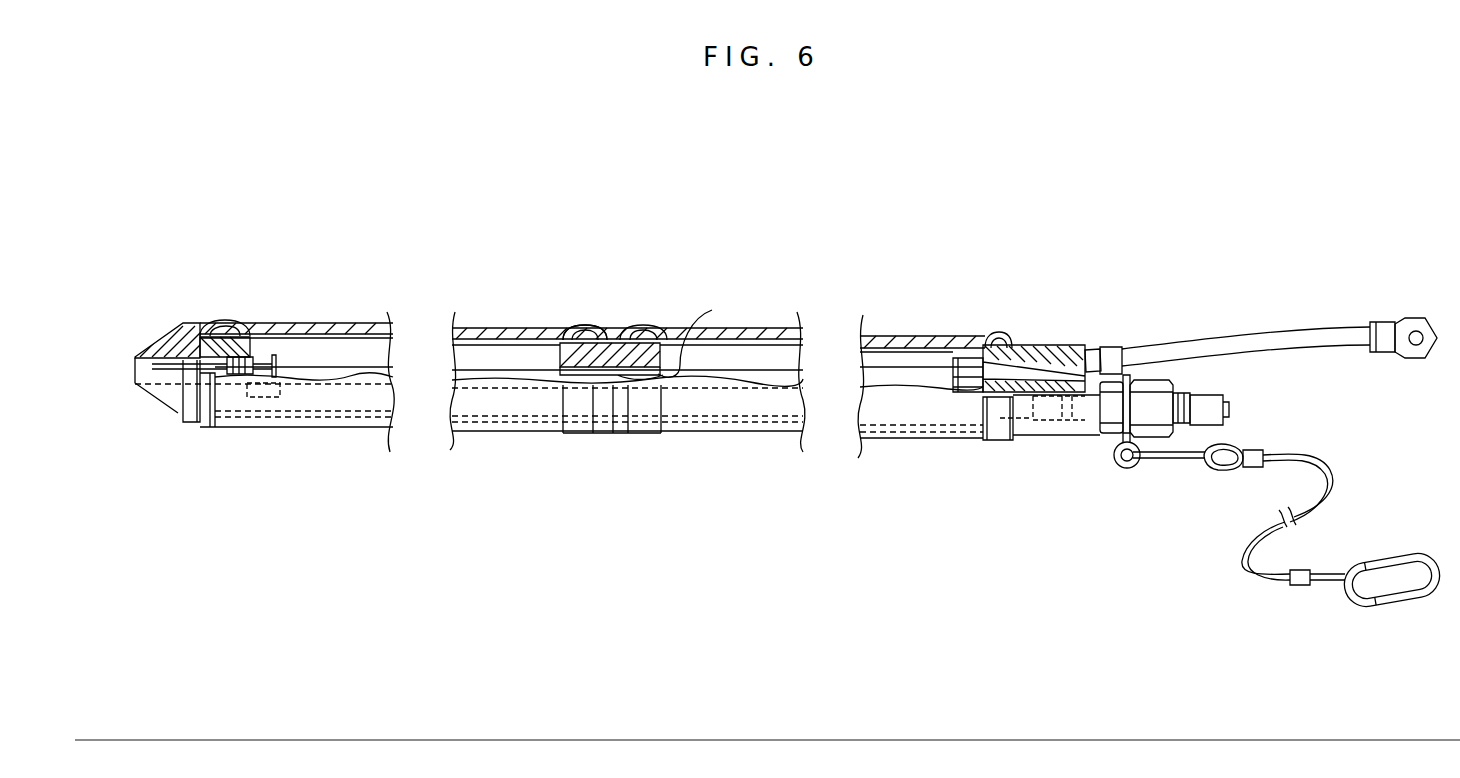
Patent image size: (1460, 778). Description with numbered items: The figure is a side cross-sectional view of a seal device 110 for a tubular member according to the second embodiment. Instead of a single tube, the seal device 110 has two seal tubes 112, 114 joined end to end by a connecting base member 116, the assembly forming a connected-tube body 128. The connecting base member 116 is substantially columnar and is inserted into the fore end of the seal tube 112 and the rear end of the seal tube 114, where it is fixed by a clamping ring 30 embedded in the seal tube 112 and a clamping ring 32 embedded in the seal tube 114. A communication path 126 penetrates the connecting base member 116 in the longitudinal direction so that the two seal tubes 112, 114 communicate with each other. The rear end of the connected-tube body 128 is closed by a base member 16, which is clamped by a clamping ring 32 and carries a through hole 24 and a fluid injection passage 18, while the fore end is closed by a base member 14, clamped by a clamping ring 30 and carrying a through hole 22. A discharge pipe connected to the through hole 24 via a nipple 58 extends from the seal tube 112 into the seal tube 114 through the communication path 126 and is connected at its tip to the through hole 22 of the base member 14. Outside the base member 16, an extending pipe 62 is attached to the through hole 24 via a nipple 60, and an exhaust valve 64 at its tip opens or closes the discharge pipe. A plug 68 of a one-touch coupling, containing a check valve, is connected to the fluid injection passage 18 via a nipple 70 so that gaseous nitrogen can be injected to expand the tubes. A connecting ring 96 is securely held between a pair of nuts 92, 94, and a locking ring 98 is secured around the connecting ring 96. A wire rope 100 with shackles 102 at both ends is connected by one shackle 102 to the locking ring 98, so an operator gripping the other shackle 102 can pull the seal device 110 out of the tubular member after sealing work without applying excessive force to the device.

The base member 14 is at (188, 424).
The base member 16 is at (1050, 437).
The fluid injection passage 18 is at (995, 405).
The through hole 22 is at (178, 398).
The through hole 24 is at (1052, 345).
The clamping ring 30 is at (240, 328).
The clamping ring 32 is at (586, 330).
The nipple 58 is at (968, 357).
The nipple 60 is at (1112, 347).
The extending pipe 62 is at (1238, 330).
The exhaust valve 64 is at (1396, 318).
The plug 68 is at (1230, 396).
The nipple 70 is at (1080, 440).
The nut 92 is at (1093, 349).
The nut 94 is at (1163, 460).
The connecting ring 96 is at (1115, 383).
The locking ring 98 is at (1127, 470).
The wire rope 100 is at (1332, 478).
The shackle 102 is at (1195, 465).
The seal device 110 is at (1108, 138).
The seal tube 112 is at (764, 326).
The seal tube 114 is at (487, 320).
The connecting base member 116 is at (562, 342).
The communication path 126 is at (703, 337).
The connected-tube body 128 is at (636, 461).